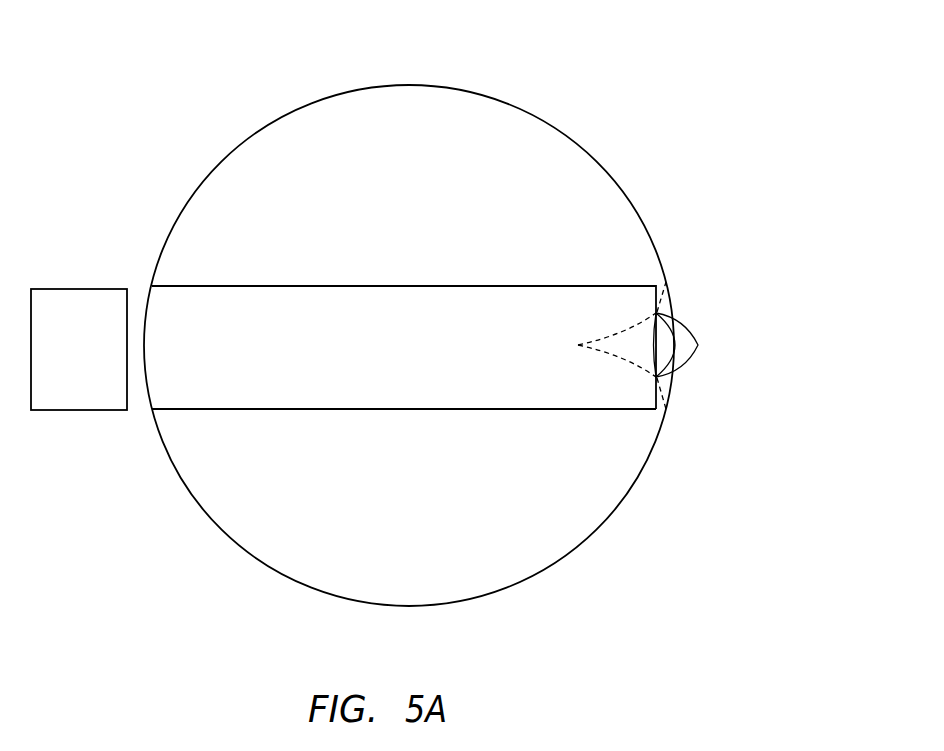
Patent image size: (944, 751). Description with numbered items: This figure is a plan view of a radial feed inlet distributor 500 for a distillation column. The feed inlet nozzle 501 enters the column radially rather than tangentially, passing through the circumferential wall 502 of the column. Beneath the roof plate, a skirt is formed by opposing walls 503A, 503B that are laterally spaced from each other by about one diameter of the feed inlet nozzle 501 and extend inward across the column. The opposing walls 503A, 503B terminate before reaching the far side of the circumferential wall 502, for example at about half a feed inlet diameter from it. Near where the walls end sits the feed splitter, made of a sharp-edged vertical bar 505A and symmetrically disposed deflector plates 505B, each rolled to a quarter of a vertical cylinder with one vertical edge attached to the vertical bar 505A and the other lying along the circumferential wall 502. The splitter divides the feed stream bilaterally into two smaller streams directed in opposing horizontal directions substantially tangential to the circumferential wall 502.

The radial feed inlet distributor 500 is at (702, 45).
The feed inlet nozzle 501 is at (67, 289).
The circumferential wall 502 is at (533, 117).
The opposing wall 503A is at (262, 286).
The opposing wall 503B is at (262, 410).
The sharp-edged vertical bar 505A is at (578, 345).
The deflector plates 505B is at (699, 345).